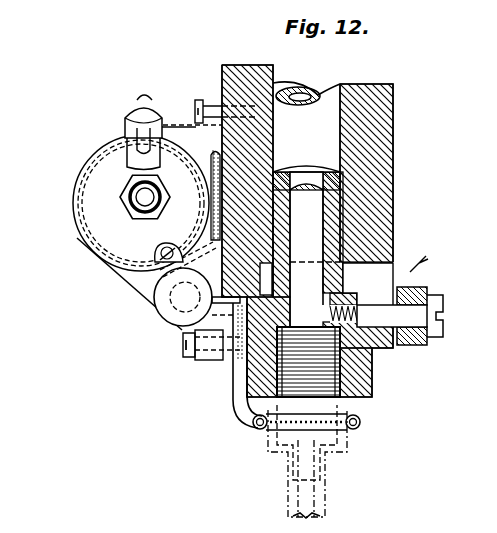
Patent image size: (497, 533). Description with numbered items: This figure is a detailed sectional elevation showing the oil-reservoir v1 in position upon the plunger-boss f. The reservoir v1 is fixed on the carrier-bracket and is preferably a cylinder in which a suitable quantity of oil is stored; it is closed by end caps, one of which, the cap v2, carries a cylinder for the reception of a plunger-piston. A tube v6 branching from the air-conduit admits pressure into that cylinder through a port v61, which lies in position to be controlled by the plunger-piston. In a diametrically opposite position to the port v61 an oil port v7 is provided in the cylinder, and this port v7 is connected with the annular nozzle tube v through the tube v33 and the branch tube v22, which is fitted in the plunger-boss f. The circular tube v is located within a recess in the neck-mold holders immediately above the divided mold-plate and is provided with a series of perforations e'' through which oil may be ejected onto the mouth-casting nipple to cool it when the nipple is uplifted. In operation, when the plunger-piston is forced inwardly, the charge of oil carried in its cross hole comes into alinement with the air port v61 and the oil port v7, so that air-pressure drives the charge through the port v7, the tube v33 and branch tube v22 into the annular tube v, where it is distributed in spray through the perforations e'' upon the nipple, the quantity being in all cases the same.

The reservoir v1 is at (97, 181).
The end cap v2 is at (113, 242).
The tube v6 is at (217, 207).
The port v61 is at (160, 292).
The port v7 is at (182, 302).
The tube v33 is at (230, 308).
The branch tube v22 is at (238, 382).
The circular tube v is at (258, 427).
The perforations e'' is at (323, 461).
The plunger-boss f is at (321, 231).
The bolt f' is at (400, 314).